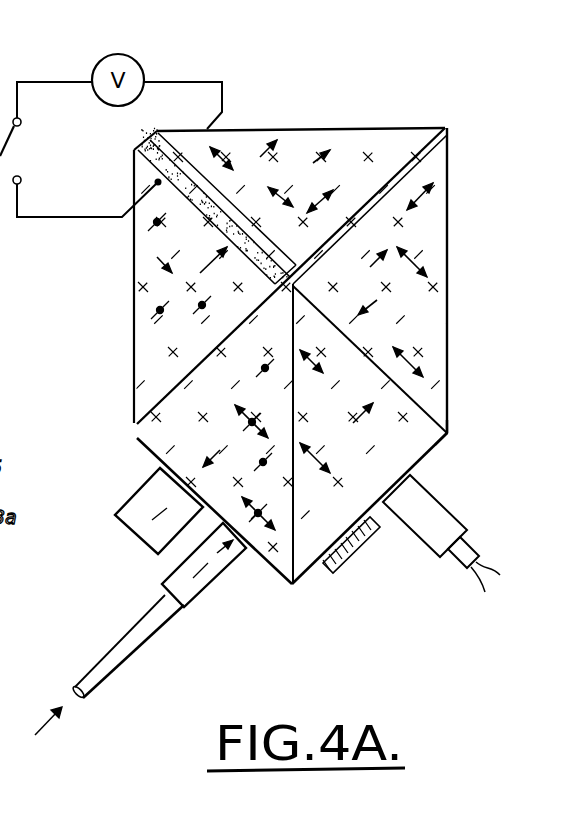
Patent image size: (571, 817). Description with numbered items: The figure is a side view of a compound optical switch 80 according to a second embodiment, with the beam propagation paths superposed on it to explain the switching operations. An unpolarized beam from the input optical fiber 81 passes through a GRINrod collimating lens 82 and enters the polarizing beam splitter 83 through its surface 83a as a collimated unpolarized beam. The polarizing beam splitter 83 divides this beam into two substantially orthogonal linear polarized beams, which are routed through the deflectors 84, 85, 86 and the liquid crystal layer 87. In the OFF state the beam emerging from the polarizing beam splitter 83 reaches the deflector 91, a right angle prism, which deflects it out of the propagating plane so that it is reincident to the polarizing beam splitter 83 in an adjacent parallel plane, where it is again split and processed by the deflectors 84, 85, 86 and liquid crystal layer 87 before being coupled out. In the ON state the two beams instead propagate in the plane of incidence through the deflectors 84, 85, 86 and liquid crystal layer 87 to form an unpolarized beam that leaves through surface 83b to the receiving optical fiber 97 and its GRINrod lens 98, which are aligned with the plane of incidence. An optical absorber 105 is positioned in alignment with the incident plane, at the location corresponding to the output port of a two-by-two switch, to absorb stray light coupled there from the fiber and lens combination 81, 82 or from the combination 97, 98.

The switch 80 is at (331, 110).
The input optical fiber 81 is at (125, 638).
The GRINrod collimating lens 82 is at (200, 583).
The polarizing beam splitter 83 is at (316, 573).
The surface 83a is at (284, 580).
The surface 83b is at (448, 437).
The deflector 84 is at (432, 398).
The deflector 85 is at (398, 140).
The deflector 86 is at (134, 290).
The liquid crystal layer 87 is at (140, 143).
The deflector 91 is at (141, 497).
The receiving optical fiber 97 is at (470, 548).
The GRINrod lens 98 is at (440, 510).
The optical absorber 105 is at (355, 546).